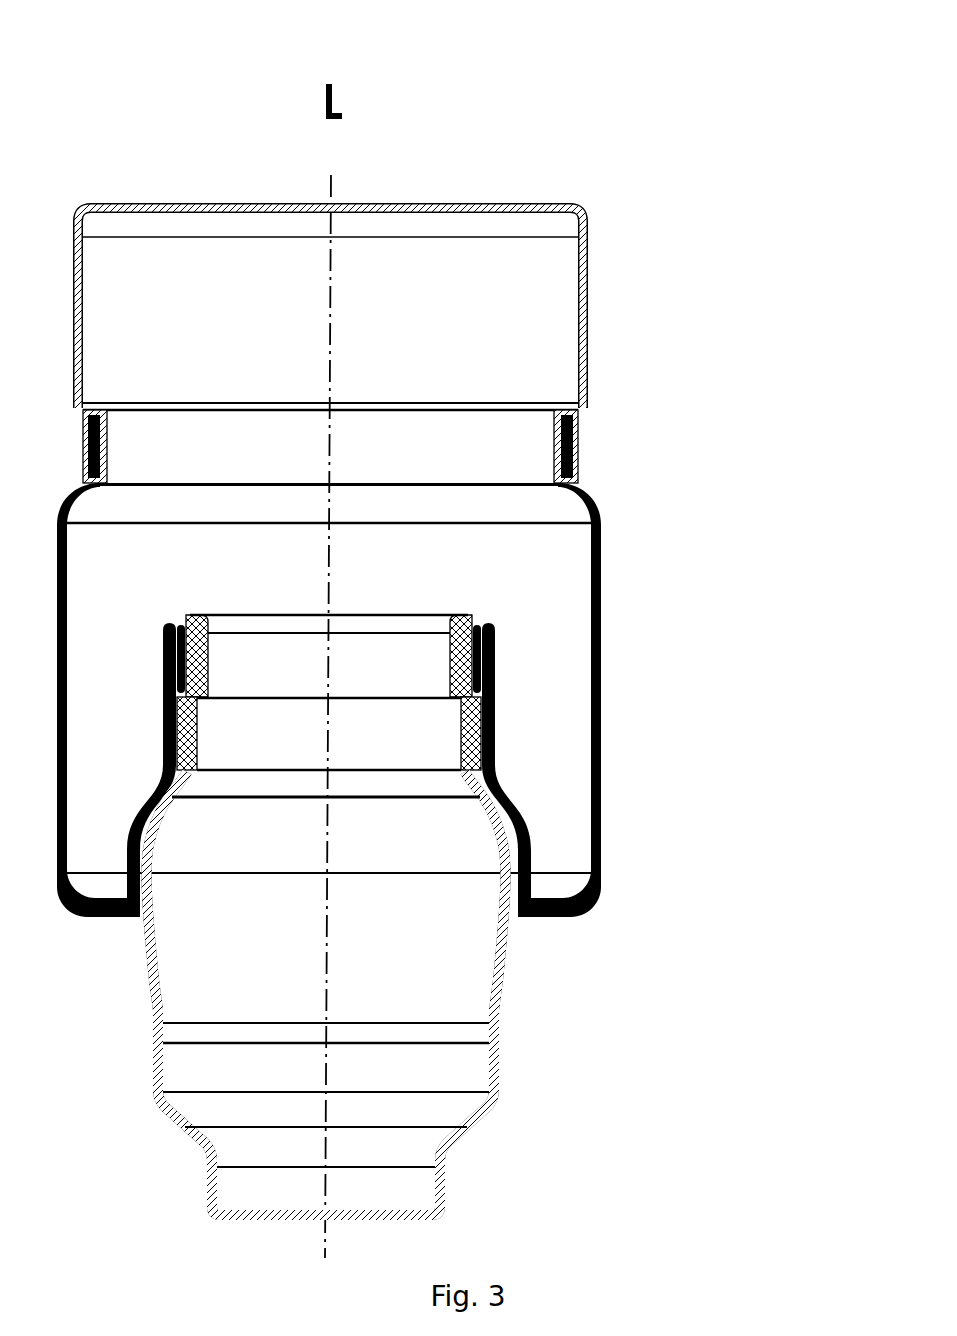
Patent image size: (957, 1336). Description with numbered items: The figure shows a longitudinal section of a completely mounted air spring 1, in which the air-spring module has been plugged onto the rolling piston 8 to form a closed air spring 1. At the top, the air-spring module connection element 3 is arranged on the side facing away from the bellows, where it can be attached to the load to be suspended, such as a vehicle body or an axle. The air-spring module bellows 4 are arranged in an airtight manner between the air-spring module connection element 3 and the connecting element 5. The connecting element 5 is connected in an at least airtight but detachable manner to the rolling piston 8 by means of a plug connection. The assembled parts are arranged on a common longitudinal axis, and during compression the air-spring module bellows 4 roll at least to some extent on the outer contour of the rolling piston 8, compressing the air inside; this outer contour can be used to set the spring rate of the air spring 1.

The air spring 1 is at (792, 88).
The air-spring module connection element 3 is at (590, 327).
The air-spring module bellows 4 is at (602, 548).
The connecting element 5 is at (495, 725).
The rolling piston 8 is at (450, 1153).